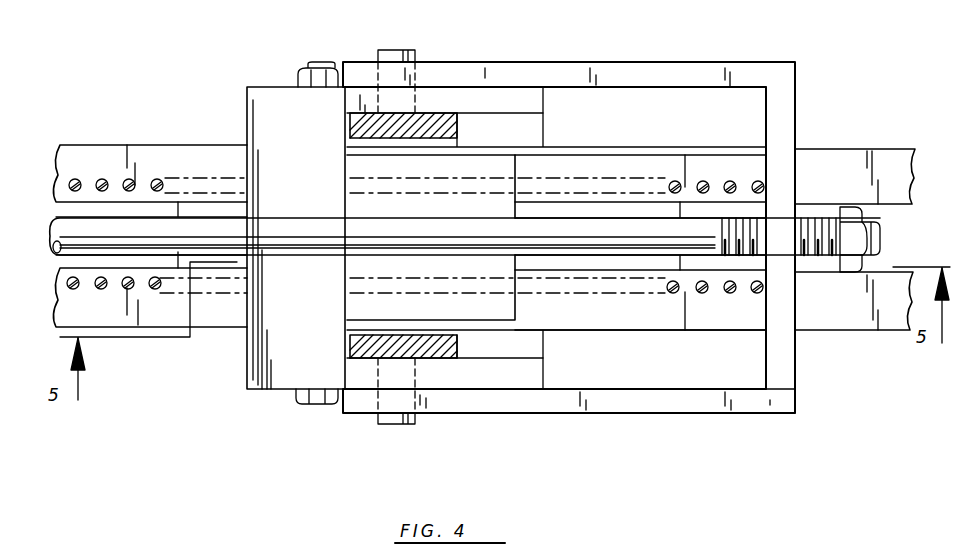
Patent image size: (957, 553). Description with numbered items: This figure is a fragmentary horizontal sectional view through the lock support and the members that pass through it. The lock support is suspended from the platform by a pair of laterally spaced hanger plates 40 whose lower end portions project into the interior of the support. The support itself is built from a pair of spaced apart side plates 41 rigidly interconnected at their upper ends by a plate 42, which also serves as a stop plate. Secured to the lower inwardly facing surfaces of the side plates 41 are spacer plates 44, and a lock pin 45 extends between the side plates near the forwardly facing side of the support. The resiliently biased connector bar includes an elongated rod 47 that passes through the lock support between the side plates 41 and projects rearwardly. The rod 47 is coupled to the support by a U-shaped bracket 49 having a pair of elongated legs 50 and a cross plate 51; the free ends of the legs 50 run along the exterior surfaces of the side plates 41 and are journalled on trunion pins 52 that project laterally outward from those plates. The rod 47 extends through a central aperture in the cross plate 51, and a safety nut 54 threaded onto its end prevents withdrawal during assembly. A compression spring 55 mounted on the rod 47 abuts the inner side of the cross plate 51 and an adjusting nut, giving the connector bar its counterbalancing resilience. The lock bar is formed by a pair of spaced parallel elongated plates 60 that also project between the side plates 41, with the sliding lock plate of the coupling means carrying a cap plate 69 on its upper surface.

The hanger plates 40 is at (455, 128).
The side plates 41 is at (522, 101).
The plate 42 is at (258, 348).
The spacer plates 44 is at (527, 135).
The lock pin 45 is at (320, 400).
The elongated rod 47 is at (73, 225).
The U-shaped bracket 49 is at (752, 414).
The legs 50 is at (605, 68).
The cross plate 51 is at (783, 120).
The trunion pins 52 is at (400, 50).
The safety nut 54 is at (852, 213).
The compression spring 55 is at (100, 290).
The elongated plates 60 is at (163, 148).
The cap plate 69 is at (497, 309).